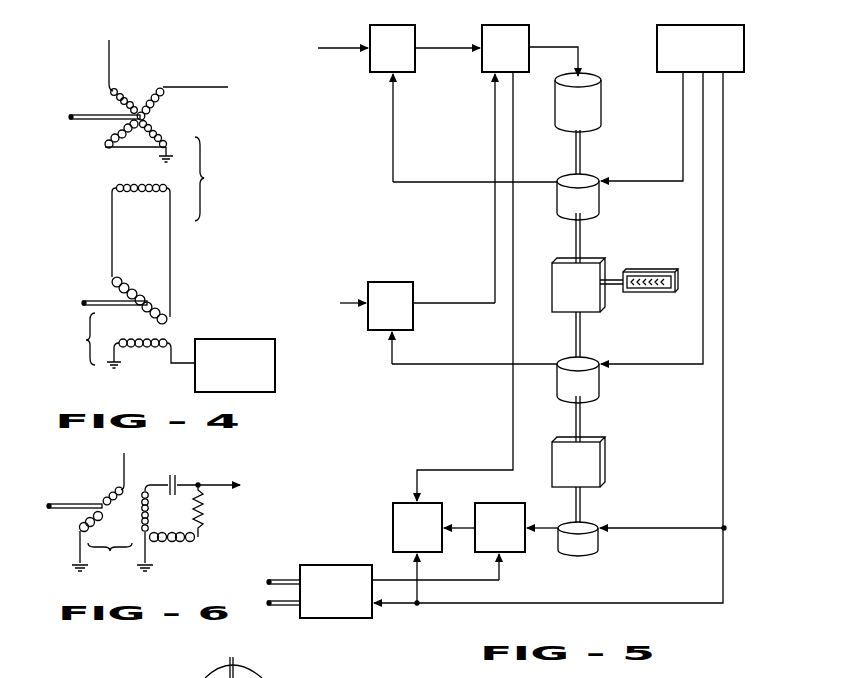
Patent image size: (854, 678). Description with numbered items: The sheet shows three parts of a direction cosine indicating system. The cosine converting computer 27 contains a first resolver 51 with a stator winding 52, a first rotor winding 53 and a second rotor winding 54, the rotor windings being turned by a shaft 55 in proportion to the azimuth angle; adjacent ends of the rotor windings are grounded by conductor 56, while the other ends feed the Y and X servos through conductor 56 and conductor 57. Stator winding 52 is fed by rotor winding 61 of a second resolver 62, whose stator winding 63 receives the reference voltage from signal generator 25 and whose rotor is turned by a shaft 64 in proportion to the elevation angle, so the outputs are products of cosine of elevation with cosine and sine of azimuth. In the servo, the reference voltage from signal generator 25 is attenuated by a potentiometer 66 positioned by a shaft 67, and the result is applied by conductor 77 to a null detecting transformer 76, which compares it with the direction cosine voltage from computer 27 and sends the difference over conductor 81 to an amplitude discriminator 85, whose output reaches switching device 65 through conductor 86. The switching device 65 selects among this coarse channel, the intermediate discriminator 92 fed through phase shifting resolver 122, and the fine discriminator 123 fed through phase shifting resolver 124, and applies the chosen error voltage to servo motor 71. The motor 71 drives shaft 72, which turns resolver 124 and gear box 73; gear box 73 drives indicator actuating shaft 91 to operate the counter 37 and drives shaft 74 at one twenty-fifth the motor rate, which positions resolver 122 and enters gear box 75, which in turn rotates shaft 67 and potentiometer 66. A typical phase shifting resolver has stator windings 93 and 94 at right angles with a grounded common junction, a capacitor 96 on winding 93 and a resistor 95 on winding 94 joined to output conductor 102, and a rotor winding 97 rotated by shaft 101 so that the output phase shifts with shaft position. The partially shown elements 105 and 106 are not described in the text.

In FIG. 4, the signal generator 25 is at (276, 370).
In FIG. 5, the signal generator 25 is at (667, 25).
In FIG. 4, the cosine converting computer 27 is at (80, 249).
In FIG. 5, the cosine converting computer 27 is at (348, 618).
In FIG. 5, the indicating device 37 is at (653, 272).
In FIG. 4, the first resolver 51 is at (178, 121).
In FIG. 4, the stator winding 52 is at (127, 197).
In FIG. 4, the first rotor winding 53 is at (163, 94).
In FIG. 4, the second rotor winding 54 is at (124, 98).
In FIG. 4, the shaft 55 is at (92, 115).
In FIG. 5, the shaft 55 is at (293, 580).
In FIG. 4, the conductor 56 is at (190, 87).
In FIG. 4, the conductor 57 is at (109, 62).
In FIG. 5, the conductor 57 is at (410, 580).
In FIG. 4, the rotor winding 61 is at (143, 297).
In FIG. 4, the second resolver 62 is at (181, 331).
In FIG. 4, the stator winding 63 is at (143, 340).
In FIG. 4, the shaft 64 is at (104, 301).
In FIG. 5, the shaft 64 is at (295, 606).
In FIG. 5, the switching device 65 is at (496, 25).
In FIG. 5, the potentiometer 66 is at (594, 553).
In FIG. 5, the shaft 67 is at (586, 500).
In FIG. 5, the servo motor 71 is at (558, 100).
In FIG. 5, the shaft 72 is at (583, 155).
In FIG. 5, the gear box 73 is at (601, 262).
In FIG. 5, the shaft 74 is at (583, 334).
In FIG. 5, the gear box 75 is at (606, 466).
In FIG. 5, the null detecting transformer 76 is at (520, 553).
In FIG. 5, the conductor 77 is at (538, 527).
In FIG. 5, the conductor 81 is at (457, 528).
In FIG. 5, the amplitude discriminator 85 is at (393, 520).
In FIG. 5, the conductor 86 is at (465, 286).
In FIG. 5, the indicator actuating shaft 91 is at (612, 286).
In FIG. 5, the discriminator 92 is at (388, 282).
In FIG. 6, the stator winding 93 is at (141, 517).
In FIG. 6, the stator winding 94 is at (178, 545).
In FIG. 6, the resistor 95 is at (204, 512).
In FIG. 6, the capacitor 96 is at (174, 477).
In FIG. 6, the rotor winding 97 is at (104, 492).
In FIG. 6, the shaft 101 is at (63, 504).
In FIG. 6, the output conductor 102 is at (217, 484).
In FIG. 6, the element 105 is at (248, 676).
In FIG. 6, the element 106 is at (228, 672).
In FIG. 5, the phase shifting resolver 122 is at (567, 393).
In FIG. 5, the discriminator 123 is at (383, 25).
In FIG. 5, the phase shifting resolver 124 is at (560, 210).